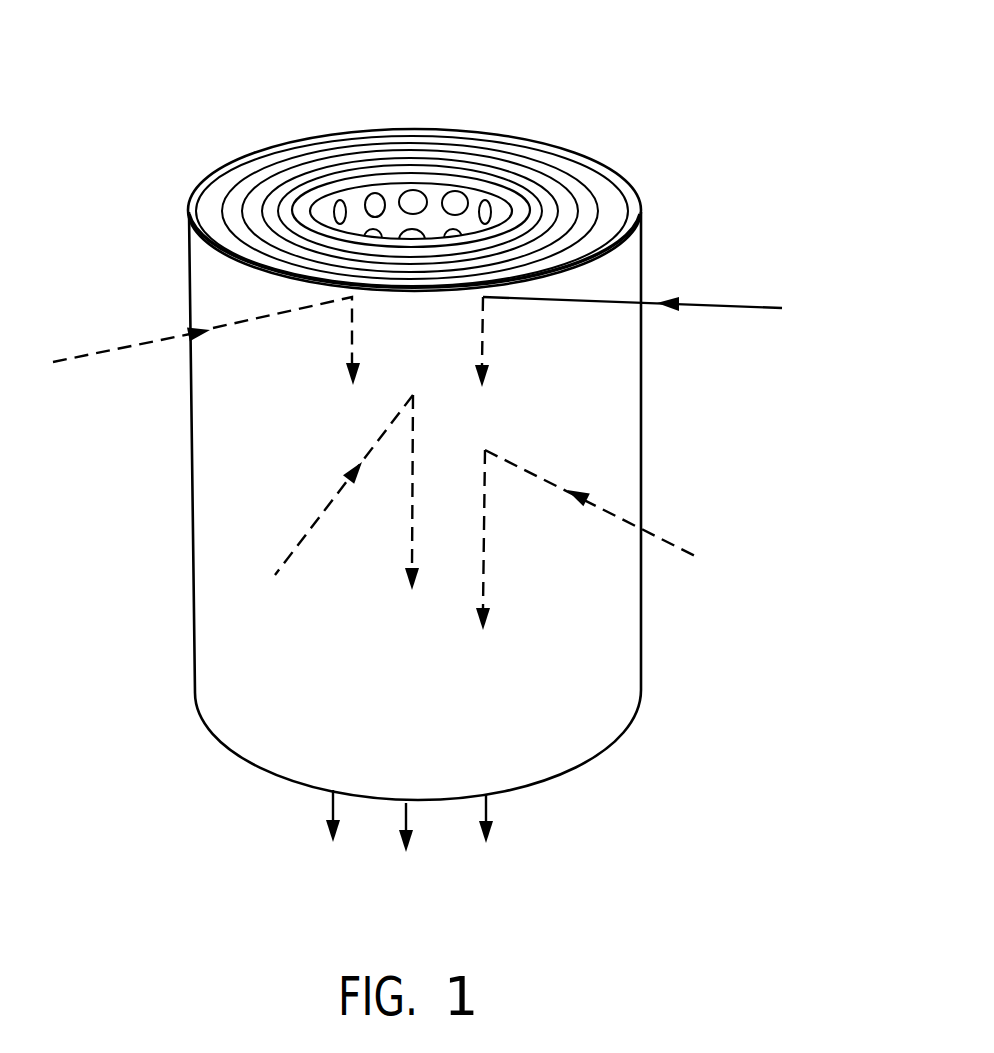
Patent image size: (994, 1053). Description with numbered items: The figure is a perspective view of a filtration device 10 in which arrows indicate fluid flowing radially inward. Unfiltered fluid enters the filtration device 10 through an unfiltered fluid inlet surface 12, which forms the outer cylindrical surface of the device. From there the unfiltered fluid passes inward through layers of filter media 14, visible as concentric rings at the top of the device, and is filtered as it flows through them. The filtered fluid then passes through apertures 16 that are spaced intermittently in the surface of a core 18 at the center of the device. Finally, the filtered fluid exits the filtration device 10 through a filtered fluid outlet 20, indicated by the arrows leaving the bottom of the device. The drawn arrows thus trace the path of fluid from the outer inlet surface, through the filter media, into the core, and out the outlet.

The filtration device 10 is at (432, 454).
The unfiltered fluid inlet surface 12 is at (217, 625).
The layers of filter media 14 is at (583, 198).
The apertures 16 is at (427, 203).
The core 18 is at (353, 193).
The filtered fluid outlet 20 is at (456, 852).